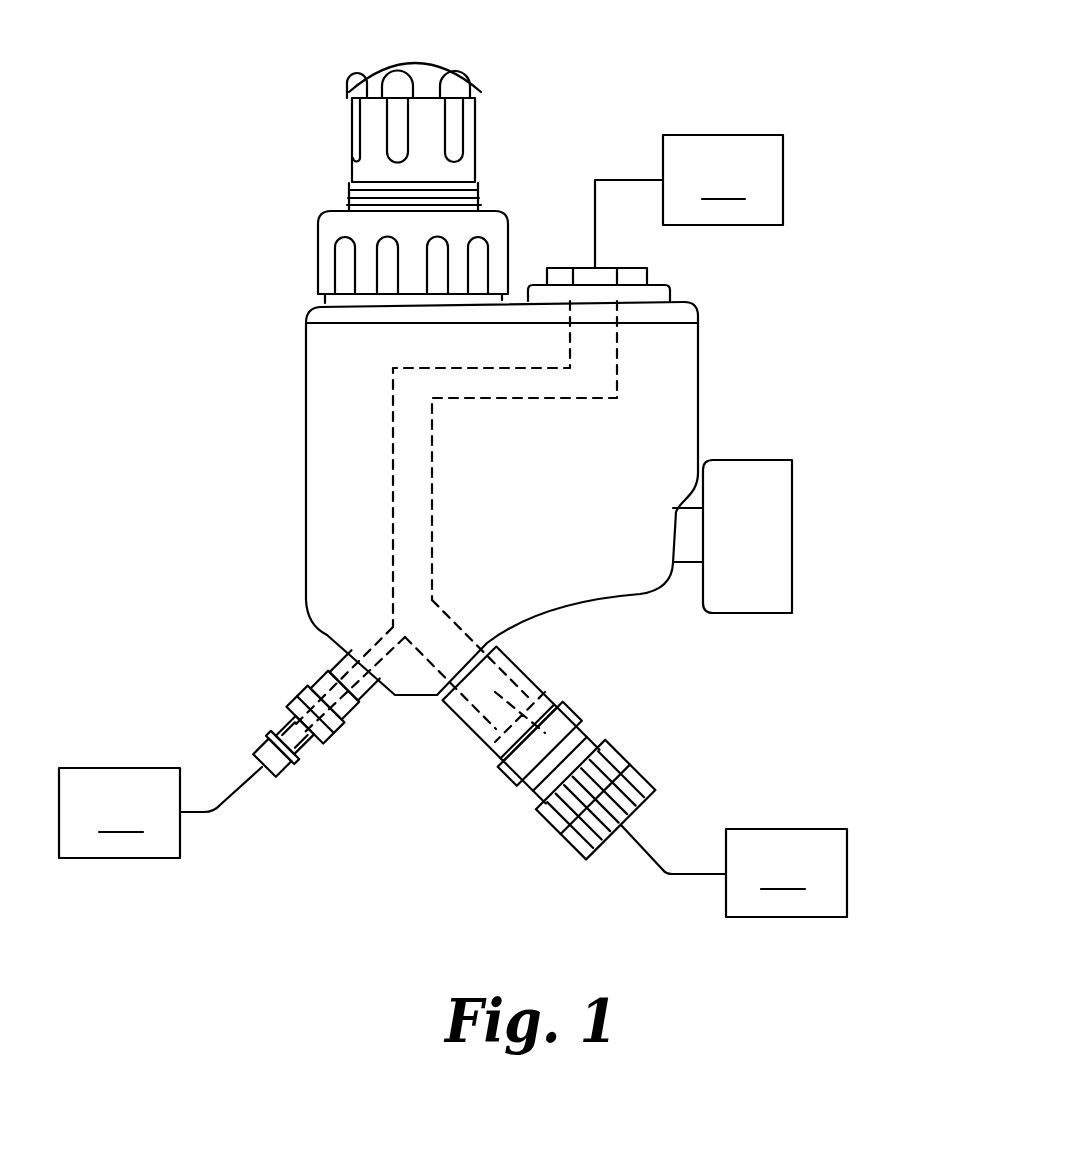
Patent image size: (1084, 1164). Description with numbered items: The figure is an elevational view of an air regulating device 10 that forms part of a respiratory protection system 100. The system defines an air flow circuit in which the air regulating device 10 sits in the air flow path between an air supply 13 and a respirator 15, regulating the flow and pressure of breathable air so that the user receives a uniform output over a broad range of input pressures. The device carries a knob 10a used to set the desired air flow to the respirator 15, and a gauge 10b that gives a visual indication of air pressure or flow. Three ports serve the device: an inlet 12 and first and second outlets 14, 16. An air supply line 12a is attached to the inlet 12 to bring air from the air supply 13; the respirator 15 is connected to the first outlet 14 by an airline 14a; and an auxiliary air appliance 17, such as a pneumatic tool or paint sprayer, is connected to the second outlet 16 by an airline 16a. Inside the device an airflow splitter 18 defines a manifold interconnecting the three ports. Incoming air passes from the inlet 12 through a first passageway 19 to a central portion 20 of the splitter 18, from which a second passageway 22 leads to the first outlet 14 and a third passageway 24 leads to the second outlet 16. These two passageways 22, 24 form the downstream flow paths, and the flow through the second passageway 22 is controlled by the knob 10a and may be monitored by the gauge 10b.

The respiratory protection system 100 is at (806, 54).
The air regulating device 10 is at (298, 356).
The knob 10a is at (366, 144).
The air pressure or air flow gauge 10b is at (783, 534).
The inlet 12 is at (283, 772).
The air supply line 12a is at (202, 812).
The air supply 13 is at (119, 813).
The first outlet 14 is at (560, 268).
The airline 14a is at (620, 180).
The respirator 15 is at (723, 180).
The second outlet 16 is at (650, 786).
The airline 16a is at (693, 874).
The auxiliary air appliance 17 is at (786, 873).
The airflow splitter 18 is at (418, 479).
The first passageway 19 is at (280, 694).
The central portion 20 is at (420, 608).
The second passageway 22 is at (408, 553).
The third passageway 24 is at (532, 668).